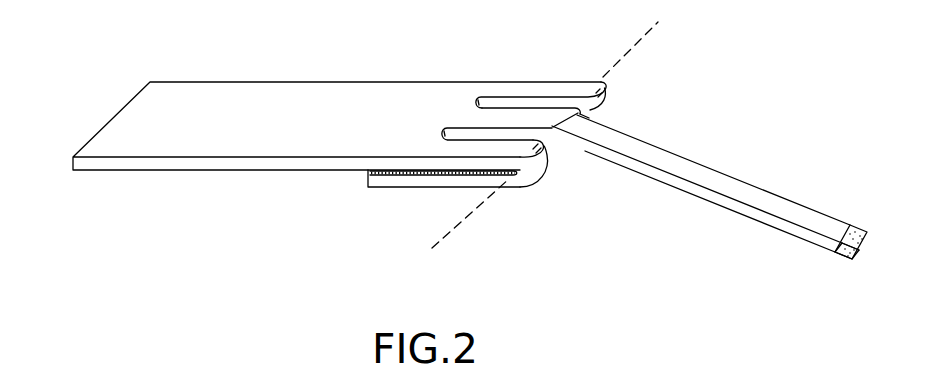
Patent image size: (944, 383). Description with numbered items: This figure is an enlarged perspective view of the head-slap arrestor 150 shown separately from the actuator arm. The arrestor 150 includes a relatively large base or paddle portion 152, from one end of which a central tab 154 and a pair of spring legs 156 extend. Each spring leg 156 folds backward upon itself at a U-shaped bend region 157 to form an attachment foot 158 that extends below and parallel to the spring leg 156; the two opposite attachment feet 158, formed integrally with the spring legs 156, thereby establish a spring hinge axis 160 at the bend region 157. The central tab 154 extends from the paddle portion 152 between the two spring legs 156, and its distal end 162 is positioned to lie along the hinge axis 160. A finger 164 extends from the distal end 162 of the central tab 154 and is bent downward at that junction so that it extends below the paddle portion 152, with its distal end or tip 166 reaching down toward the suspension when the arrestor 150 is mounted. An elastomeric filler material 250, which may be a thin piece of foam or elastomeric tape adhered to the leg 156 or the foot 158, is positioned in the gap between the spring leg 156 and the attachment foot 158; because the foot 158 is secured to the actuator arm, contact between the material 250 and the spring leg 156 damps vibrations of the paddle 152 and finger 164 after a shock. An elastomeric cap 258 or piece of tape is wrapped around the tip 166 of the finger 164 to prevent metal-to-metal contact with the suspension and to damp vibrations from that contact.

The head-slap arrestor 150 is at (476, 175).
The paddle portion 152 is at (204, 93).
The central tab 154 is at (480, 117).
The spring legs 156 is at (525, 90).
The U-shaped bend region 157 is at (520, 172).
The attachment foot 158 is at (402, 187).
The spring hinge axis 160 is at (652, 30).
The distal end of the central tab 162 is at (558, 122).
The finger 164 is at (722, 184).
The tip of the finger 166 is at (850, 223).
The elastomeric filler material 250 is at (372, 171).
The elastomeric cap 258 is at (838, 254).